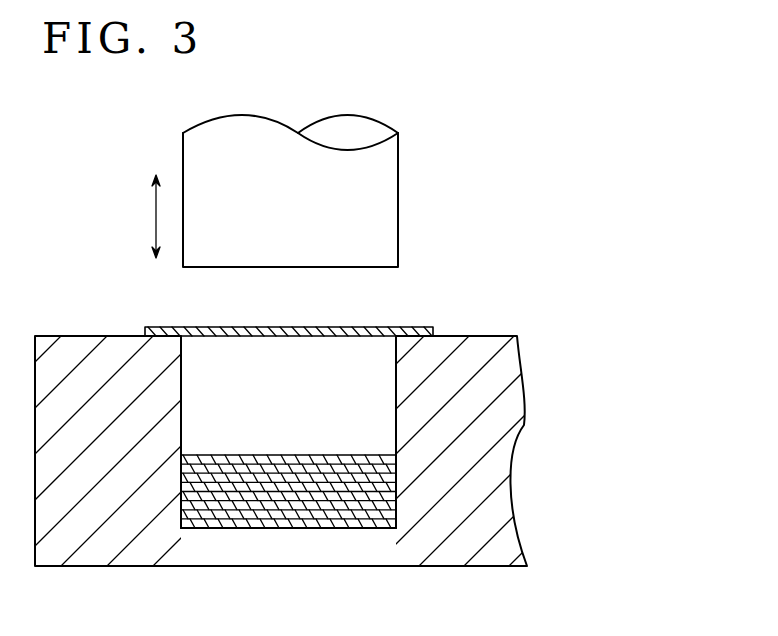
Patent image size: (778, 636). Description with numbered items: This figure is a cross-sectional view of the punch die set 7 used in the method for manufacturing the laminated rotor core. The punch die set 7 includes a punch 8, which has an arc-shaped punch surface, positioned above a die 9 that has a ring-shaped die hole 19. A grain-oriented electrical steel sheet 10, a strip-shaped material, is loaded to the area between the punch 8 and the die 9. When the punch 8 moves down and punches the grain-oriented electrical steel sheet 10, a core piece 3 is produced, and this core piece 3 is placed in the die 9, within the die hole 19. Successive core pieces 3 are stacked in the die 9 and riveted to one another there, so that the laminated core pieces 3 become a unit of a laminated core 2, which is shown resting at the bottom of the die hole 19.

The punch die set 7 is at (547, 236).
The punch 8 is at (378, 240).
The die 9 is at (480, 350).
The grain-oriented electrical steel sheet 10 is at (406, 326).
The die hole 19 is at (367, 402).
The laminated core 2 is at (398, 472).
The core piece 3 is at (243, 523).